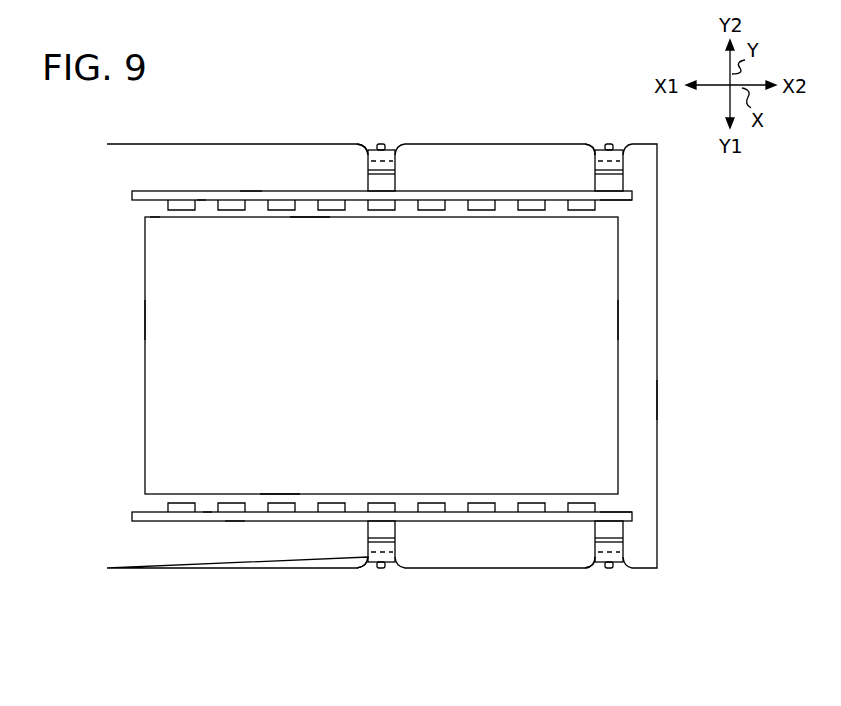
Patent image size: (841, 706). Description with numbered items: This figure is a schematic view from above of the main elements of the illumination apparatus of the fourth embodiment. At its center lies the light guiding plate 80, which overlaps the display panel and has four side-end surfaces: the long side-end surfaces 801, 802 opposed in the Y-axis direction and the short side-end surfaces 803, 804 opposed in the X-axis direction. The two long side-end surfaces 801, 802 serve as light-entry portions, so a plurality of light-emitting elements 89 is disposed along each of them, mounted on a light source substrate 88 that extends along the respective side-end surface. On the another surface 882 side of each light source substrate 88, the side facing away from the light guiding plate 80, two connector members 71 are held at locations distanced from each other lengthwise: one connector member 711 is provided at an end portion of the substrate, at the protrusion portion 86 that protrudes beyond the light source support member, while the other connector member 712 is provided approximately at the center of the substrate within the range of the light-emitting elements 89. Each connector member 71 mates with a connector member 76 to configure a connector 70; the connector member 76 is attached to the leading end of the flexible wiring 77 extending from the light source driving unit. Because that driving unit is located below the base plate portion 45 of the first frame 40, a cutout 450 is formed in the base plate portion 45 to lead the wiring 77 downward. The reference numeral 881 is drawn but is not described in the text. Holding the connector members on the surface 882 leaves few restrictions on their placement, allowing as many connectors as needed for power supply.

The first frame 40 is at (657, 347).
The base plate portion 45 is at (645, 397).
The connector 70 is at (546, 359).
The connector member 71 is at (562, 358).
The connector member 711 is at (617, 183).
The connector member 712 is at (388, 185).
The connector member 76 is at (393, 160).
The flexible wiring 77 is at (380, 143).
The cutout 450 is at (367, 150).
The light guiding plate 80 is at (145, 385).
The side-end surface 801 is at (275, 494).
The side-end surface 802 is at (312, 217).
The side-end surface 803 is at (145, 320).
The side-end surface 804 is at (618, 320).
The protrusion portion 86 is at (611, 197).
The light source substrate 88 is at (163, 191).
The bar gap portion 881 is at (206, 204).
The another surface 882 is at (250, 191).
The light-emitting elements 89 is at (485, 210).